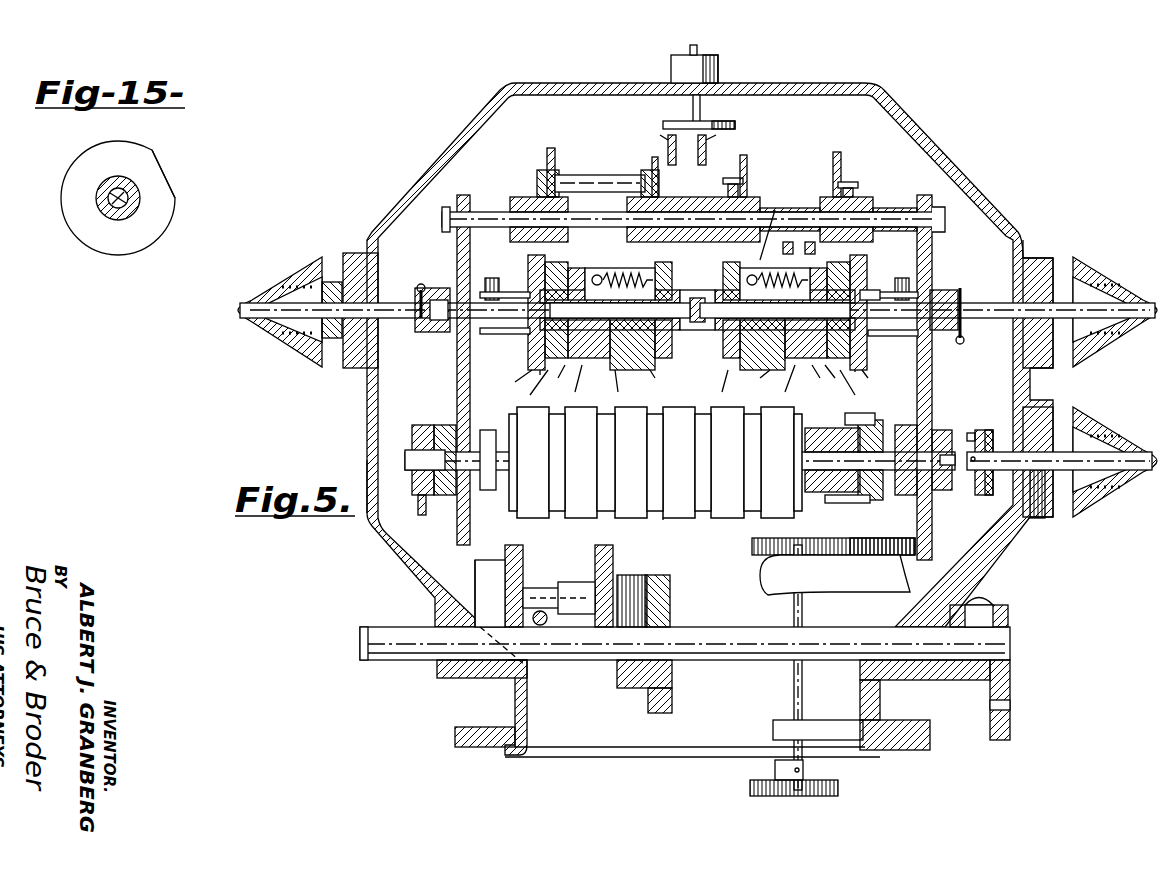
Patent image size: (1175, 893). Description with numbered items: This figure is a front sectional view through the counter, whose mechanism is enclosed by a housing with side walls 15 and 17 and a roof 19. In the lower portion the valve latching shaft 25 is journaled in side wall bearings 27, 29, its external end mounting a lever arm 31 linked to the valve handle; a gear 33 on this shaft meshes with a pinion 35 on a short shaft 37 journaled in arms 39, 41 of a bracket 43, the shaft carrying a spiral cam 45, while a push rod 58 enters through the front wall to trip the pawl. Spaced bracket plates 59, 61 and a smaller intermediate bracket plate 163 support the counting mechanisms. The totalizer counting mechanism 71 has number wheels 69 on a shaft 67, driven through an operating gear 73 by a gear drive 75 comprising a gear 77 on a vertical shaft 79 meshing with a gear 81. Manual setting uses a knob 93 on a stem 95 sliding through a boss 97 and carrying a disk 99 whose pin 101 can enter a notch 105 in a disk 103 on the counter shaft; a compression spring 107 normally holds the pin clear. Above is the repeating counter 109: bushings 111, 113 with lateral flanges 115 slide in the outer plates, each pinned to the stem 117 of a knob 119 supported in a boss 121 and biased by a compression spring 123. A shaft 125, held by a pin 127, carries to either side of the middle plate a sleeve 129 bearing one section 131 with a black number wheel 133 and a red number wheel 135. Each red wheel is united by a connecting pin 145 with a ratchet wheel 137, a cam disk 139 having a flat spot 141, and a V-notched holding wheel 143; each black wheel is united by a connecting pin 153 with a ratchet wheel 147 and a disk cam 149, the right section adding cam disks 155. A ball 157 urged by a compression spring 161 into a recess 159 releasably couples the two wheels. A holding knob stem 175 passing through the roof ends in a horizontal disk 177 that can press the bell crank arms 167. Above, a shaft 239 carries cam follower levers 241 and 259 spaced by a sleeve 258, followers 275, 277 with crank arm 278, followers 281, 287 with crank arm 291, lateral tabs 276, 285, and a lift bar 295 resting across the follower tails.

In FIG. 5, the side wall 15 is at (367, 460).
In FIG. 5, the side wall 17 is at (1023, 237).
In FIG. 5, the roof 19 is at (588, 88).
In FIG. 5, the shaft 25 is at (745, 660).
In FIG. 5, the side wall bearing 27 is at (470, 660).
In FIG. 5, the side wall bearing 29 is at (910, 660).
In FIG. 5, the lever arm 31 is at (1010, 690).
In FIG. 5, the gear 33 is at (665, 580).
In FIG. 5, the pinion 35 is at (630, 575).
In FIG. 5, the short shaft 37 is at (550, 600).
In FIG. 5, the bracket arm 39 is at (595, 550).
In FIG. 5, the bracket arm 41 is at (523, 560).
In FIG. 5, the bracket 43 is at (450, 470).
In FIG. 5, the cam 45 is at (485, 582).
In FIG. 5, the push rod 58 is at (545, 618).
In FIG. 5, the bracket plate 59 is at (457, 380).
In FIG. 5, the bracket plate 61 is at (940, 385).
In FIG. 5, the shaft 67 is at (945, 430).
In FIG. 5, the number wheels 69 is at (580, 518).
In FIG. 5, the counting mechanism 71 is at (682, 533).
In FIG. 5, the operating gear 73 is at (862, 413).
In FIG. 5, the gear drive 75 is at (845, 571).
In FIG. 5, the gear 77 is at (752, 545).
In FIG. 5, the vertical shaft 79 is at (803, 690).
In FIG. 5, the gear 81 is at (880, 555).
In FIG. 5, the manual setting knob 93 is at (1110, 425).
In FIG. 5, the stem 95 is at (1010, 470).
In FIG. 5, the boss 97 is at (1040, 407).
In FIG. 5, the disk 99 is at (993, 430).
In FIG. 5, the pin 101 is at (977, 450).
In FIG. 5, the disk 103 is at (945, 495).
In FIG. 5, the notch 105 is at (960, 440).
In FIG. 5, the compression spring 107 is at (1045, 500).
In FIG. 5, the repeating counter 109 is at (810, 314).
In FIG. 5, the bushing 111 is at (440, 285).
In FIG. 5, the bushing 113 is at (945, 330).
In FIG. 5, the lateral flange 115 is at (535, 242).
In FIG. 5, the stem 117 is at (402, 320).
In FIG. 5, the knob 119 is at (270, 345).
In FIG. 5, the boss 121 is at (355, 368).
In FIG. 5, the compression spring 123 is at (328, 282).
In FIG. 15, the shaft 125 is at (124, 202).
In FIG. 5, the shaft 125 is at (440, 332).
In FIG. 5, the pin 127 is at (597, 312).
In FIG. 15, the sleeve 129 is at (104, 191).
In FIG. 5, the sleeve 129 is at (545, 360).
In FIG. 5, the section 131 is at (615, 251).
In FIG. 5, the black number wheel 133 is at (679, 380).
In FIG. 5, the red number wheel 135 is at (679, 387).
In FIG. 5, the ratchet wheel 137 is at (640, 265).
In FIG. 5, the cam disk 139 is at (689, 390).
In FIG. 15, the flat spot 141 is at (160, 167).
In FIG. 5, the holding wheel 143 is at (685, 390).
In FIG. 5, the connecting pin 145 is at (590, 378).
In FIG. 5, the ratchet wheel 147 is at (560, 265).
In FIG. 15, the disk cam 149 is at (64, 211).
In FIG. 5, the disk cam 149 is at (690, 390).
In FIG. 5, the connecting pin 153 is at (689, 383).
In FIG. 5, the additional cam disk 155 is at (804, 294).
In FIG. 5, the ball 157 is at (821, 247).
In FIG. 5, the recess 159 is at (803, 240).
In FIG. 5, the compression spring 161 is at (848, 258).
In FIG. 5, the dog 163 is at (687, 150).
In FIG. 5, the arm 167 is at (688, 130).
In FIG. 5, the stem 175 is at (697, 48).
In FIG. 5, the horizontal disk 177 is at (700, 123).
In FIG. 5, the shaft 239 is at (500, 215).
In FIG. 5, the cam follower lever 241 is at (841, 170).
In FIG. 5, the sleeve 258 is at (808, 210).
In FIG. 5, the cam follower 259 is at (748, 178).
In FIG. 5, the cam follower 275 is at (853, 195).
In FIG. 5, the lateral tab 276 is at (858, 185).
In FIG. 5, the cam follower 277 is at (560, 175).
In FIG. 5, the crank arm 278 is at (547, 160).
In FIG. 5, the cam follower 281 is at (750, 218).
In FIG. 5, the lateral tab 285 is at (733, 170).
In FIG. 5, the cam follower 287 is at (646, 163).
In FIG. 5, the crank arm 291 is at (652, 150).
In FIG. 5, the lift bar 295 is at (603, 175).